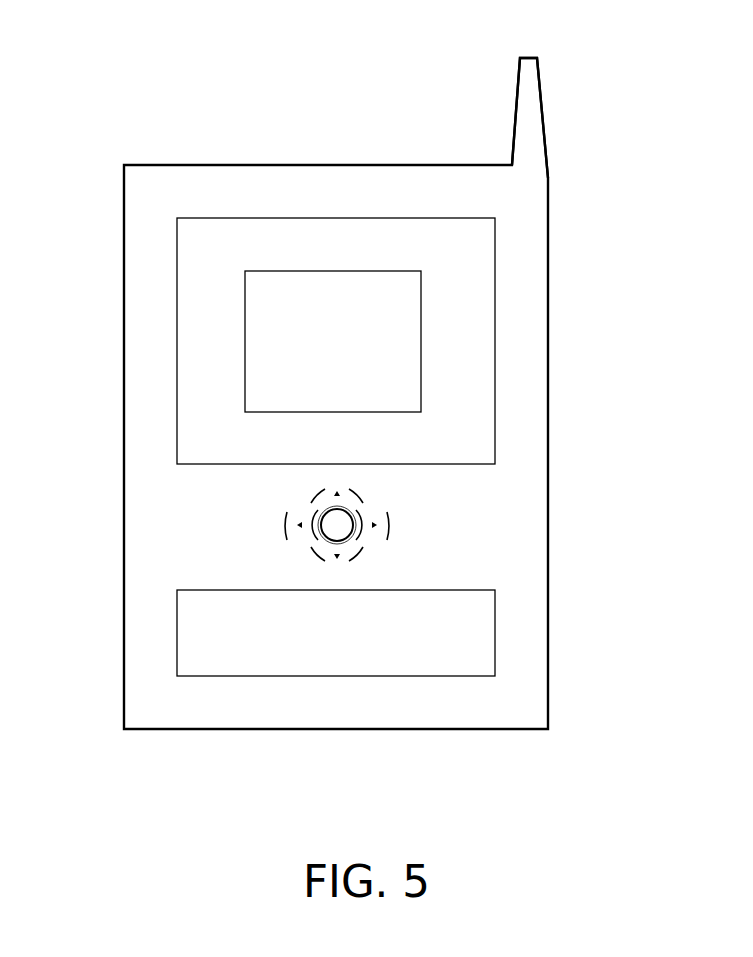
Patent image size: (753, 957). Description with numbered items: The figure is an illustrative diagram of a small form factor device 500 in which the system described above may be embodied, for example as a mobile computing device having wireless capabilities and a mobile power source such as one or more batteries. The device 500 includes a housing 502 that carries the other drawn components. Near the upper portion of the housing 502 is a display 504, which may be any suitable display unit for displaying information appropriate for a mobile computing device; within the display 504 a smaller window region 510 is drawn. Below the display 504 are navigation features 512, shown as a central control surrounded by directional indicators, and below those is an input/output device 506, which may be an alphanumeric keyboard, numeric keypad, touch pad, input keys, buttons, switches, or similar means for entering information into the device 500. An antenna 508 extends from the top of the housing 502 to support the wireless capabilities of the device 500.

The small form factor device 500 is at (140, 77).
The housing 502 is at (548, 447).
The display 504 is at (495, 234).
The input/output (I/O) device 506 is at (495, 622).
The antenna 508 is at (516, 104).
The display window 510 is at (421, 360).
The navigation features 512 is at (403, 521).